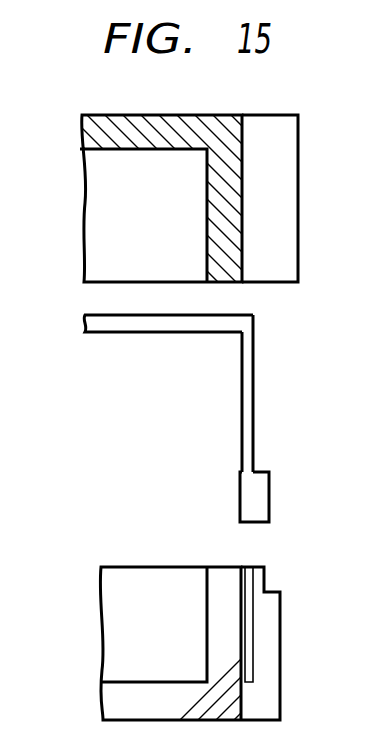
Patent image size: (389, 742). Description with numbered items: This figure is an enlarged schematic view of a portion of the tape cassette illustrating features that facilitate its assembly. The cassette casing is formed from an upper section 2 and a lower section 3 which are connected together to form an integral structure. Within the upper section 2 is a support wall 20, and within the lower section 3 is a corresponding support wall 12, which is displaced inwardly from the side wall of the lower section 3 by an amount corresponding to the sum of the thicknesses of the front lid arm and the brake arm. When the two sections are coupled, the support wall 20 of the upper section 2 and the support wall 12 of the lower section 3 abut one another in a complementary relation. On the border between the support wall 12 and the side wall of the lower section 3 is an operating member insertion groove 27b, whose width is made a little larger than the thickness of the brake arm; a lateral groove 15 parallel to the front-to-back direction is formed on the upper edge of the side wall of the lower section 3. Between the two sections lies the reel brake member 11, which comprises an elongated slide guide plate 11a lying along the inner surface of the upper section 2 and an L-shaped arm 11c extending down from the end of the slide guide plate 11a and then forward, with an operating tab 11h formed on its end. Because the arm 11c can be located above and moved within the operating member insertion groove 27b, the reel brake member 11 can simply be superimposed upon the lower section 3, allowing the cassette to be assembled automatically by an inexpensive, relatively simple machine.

The upper section 2 is at (86, 203).
The support wall 20 is at (238, 212).
The reel brake member 11 is at (209, 418).
The slide guide plate 11a is at (100, 334).
The arm 11c is at (253, 412).
The operating tab 11h is at (269, 498).
The lower section 3 is at (102, 635).
The support wall 12 is at (233, 666).
The operating member insertion groove 27b is at (247, 640).
The lateral groove 15 is at (264, 576).